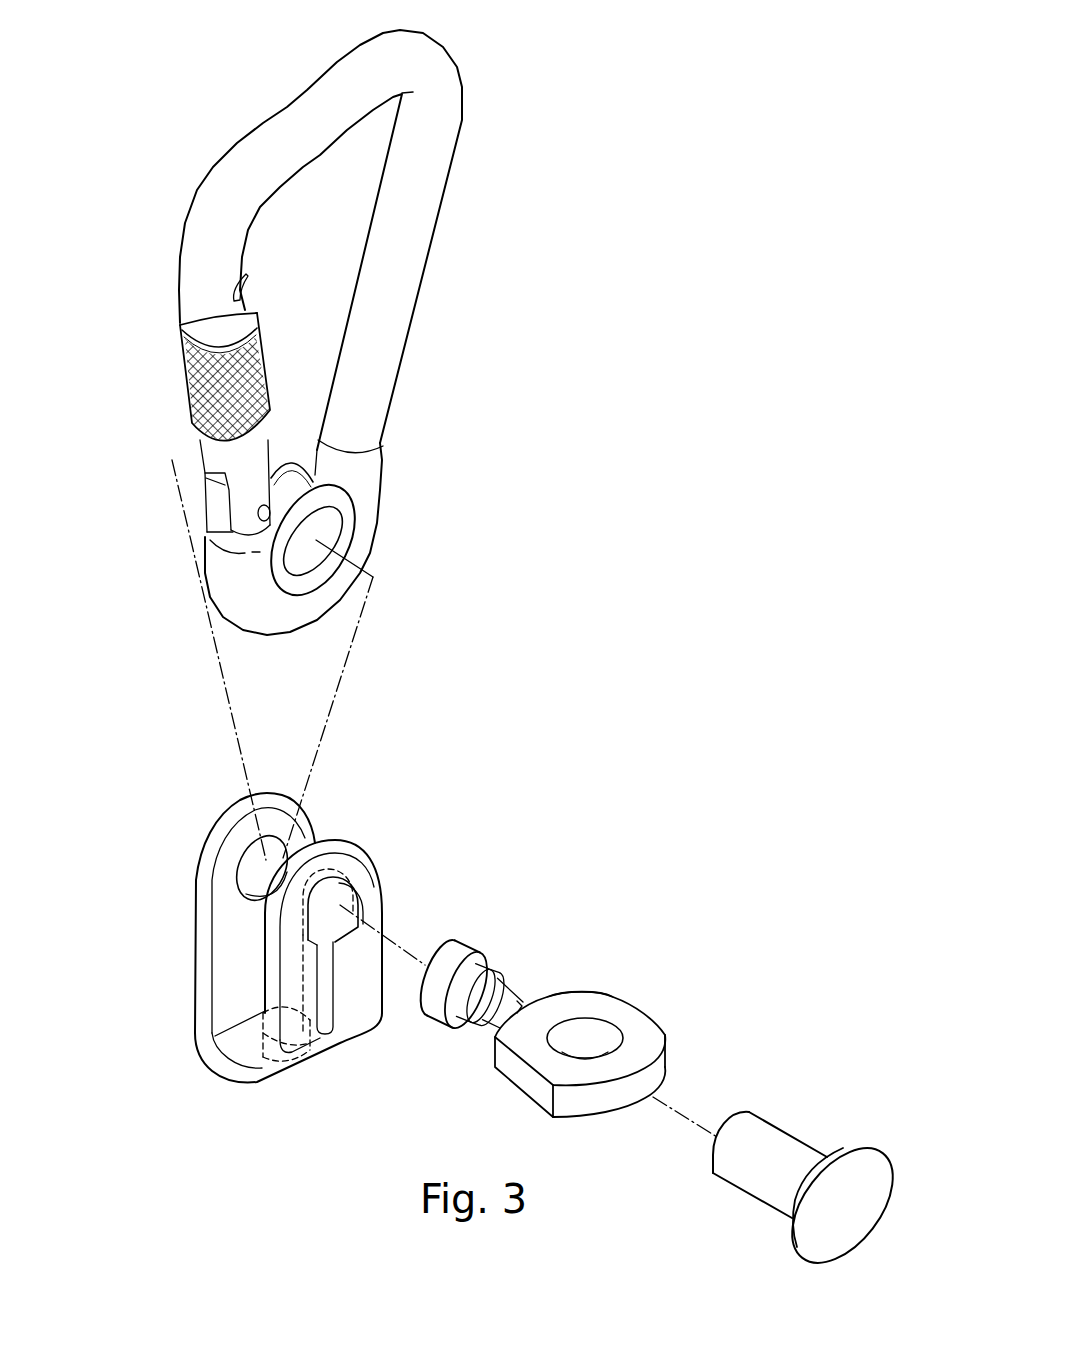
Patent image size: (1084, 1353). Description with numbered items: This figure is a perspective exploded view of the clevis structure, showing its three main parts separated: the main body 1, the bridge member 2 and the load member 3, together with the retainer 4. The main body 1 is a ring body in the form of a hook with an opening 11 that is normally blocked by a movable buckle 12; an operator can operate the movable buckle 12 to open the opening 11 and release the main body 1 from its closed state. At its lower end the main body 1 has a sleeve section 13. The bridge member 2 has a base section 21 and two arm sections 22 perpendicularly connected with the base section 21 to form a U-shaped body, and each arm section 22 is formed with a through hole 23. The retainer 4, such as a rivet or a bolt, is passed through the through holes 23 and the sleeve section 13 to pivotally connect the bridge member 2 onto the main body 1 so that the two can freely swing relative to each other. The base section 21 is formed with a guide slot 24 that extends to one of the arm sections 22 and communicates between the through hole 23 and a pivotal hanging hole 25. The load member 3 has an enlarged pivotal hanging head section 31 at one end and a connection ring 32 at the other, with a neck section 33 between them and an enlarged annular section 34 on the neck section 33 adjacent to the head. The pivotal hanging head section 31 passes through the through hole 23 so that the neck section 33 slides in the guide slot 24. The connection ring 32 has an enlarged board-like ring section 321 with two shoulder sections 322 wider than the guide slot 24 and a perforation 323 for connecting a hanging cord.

The main body 1 is at (308, 332).
The opening 11 is at (180, 415).
The movable buckle 12 is at (218, 453).
The sleeve section 13 is at (317, 531).
The bridge member 2 is at (286, 945).
The base section 21 is at (230, 1062).
The arm section 22 is at (203, 853).
The through hole 23 is at (250, 902).
The guide slot 24 is at (337, 1020).
The pivotal hanging hole 25 is at (317, 1047).
The load member 3 is at (574, 981).
The pivotal hanging head section 31 is at (467, 950).
The connection ring 32 is at (611, 1002).
The board-like ring section 321 is at (632, 1018).
The shoulder section 322 is at (560, 987).
The perforation 323 is at (587, 1030).
The neck section 33 is at (503, 1000).
The annular section 34 is at (482, 977).
The retainer 4 is at (777, 1147).